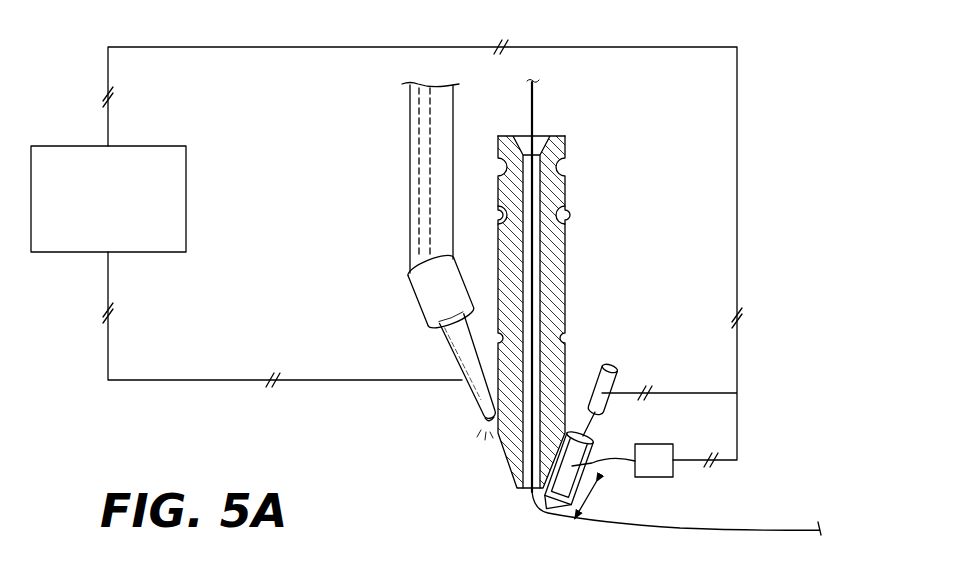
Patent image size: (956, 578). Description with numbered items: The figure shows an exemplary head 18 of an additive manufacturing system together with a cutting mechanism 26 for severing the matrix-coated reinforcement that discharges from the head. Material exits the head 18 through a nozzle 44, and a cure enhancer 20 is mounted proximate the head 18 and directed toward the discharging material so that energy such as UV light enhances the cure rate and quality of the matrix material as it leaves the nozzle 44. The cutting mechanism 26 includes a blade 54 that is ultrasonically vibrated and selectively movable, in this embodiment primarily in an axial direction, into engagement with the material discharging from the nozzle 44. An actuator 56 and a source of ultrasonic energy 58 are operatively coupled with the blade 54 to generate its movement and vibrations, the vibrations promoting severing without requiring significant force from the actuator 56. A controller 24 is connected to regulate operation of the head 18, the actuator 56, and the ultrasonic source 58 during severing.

The head 18 is at (314, 109).
The cure enhancer 20 is at (486, 420).
The controller 24 is at (118, 219).
The cutting mechanism 26 is at (766, 358).
The nozzle 44 is at (517, 470).
The blade 54 is at (565, 503).
The actuator 56 is at (598, 366).
The source of ultrasonic energy 58 is at (663, 472).